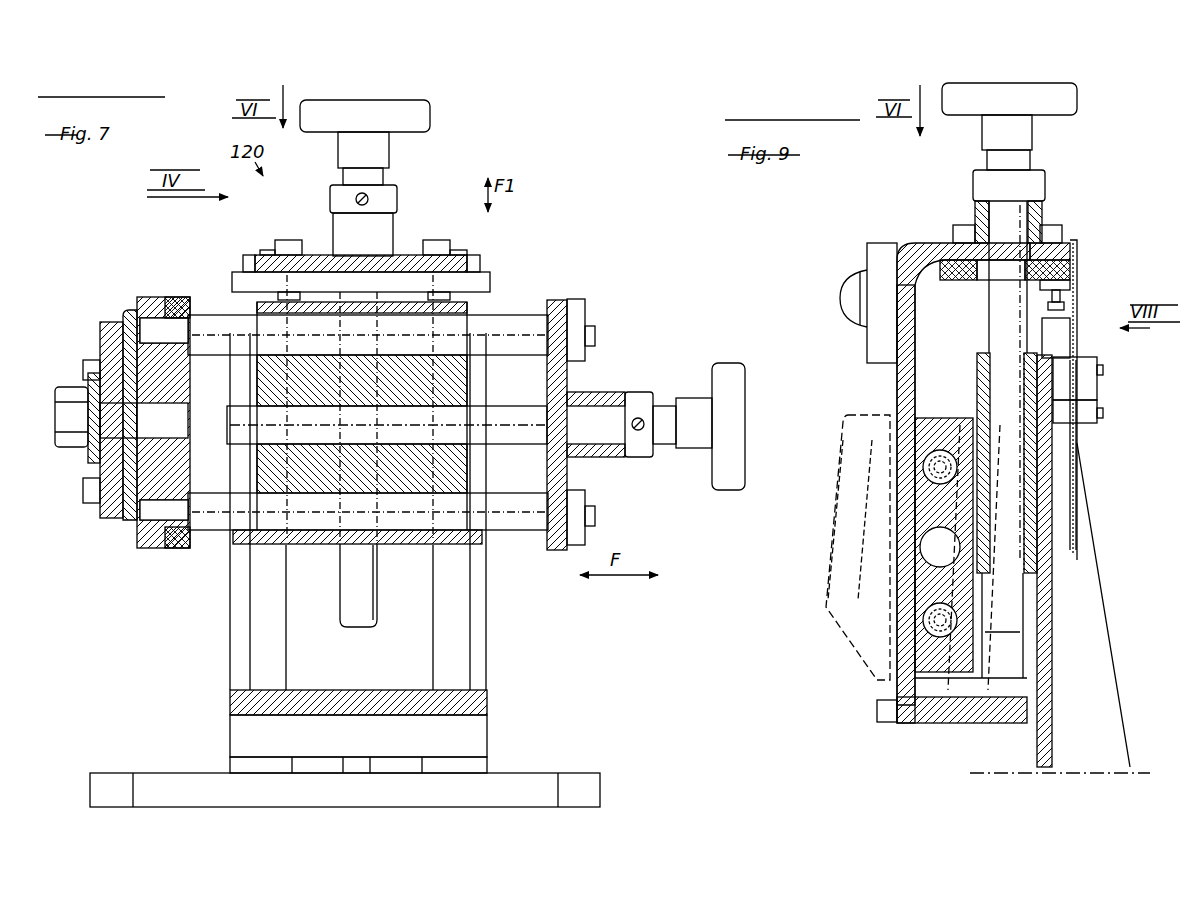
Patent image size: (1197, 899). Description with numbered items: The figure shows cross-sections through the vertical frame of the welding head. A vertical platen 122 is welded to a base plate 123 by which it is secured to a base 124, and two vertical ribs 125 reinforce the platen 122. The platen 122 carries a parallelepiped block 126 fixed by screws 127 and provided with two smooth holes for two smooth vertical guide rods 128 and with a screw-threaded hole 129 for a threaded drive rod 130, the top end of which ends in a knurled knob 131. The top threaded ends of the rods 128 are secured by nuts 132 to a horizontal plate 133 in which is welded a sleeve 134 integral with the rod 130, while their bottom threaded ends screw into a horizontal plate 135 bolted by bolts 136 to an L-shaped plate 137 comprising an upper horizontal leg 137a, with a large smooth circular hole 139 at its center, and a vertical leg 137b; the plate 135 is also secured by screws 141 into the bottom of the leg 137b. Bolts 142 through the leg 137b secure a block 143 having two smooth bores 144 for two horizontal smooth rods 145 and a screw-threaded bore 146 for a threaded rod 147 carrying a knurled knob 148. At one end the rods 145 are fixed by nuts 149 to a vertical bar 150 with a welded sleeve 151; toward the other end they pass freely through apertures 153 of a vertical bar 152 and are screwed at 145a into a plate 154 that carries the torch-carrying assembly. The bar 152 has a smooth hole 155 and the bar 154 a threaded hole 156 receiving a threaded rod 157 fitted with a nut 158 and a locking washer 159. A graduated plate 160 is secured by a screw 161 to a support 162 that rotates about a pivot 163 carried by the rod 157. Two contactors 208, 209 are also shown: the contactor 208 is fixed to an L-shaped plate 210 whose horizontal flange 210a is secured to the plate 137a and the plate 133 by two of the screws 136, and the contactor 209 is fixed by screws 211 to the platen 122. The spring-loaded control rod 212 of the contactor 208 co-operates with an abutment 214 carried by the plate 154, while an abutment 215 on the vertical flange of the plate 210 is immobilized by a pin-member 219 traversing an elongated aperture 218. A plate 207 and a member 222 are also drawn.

In FIG. 7, the vertical platen 122 is at (457, 740).
In FIG. 9, the vertical platen 122 is at (1042, 645).
In FIG. 7, the base plate 123 is at (255, 770).
In FIG. 7, the base 124 is at (575, 790).
In FIG. 9, the vertical ribs 125 is at (1090, 690).
In FIG. 7, the parallelepiped block 126 is at (505, 466).
In FIG. 9, the parallelepiped block 126 is at (978, 360).
In FIG. 9, the screws 127 is at (1040, 545).
In FIG. 7, the smooth vertical guide rods 128 is at (495, 643).
In FIG. 7, the screw-threaded hole 129 is at (455, 378).
In FIG. 7, the threaded drive rod 130 is at (357, 597).
In FIG. 9, the threaded drive rod 130 is at (1008, 313).
In FIG. 7, the knurled knob 131 is at (431, 112).
In FIG. 9, the knurled knob 131 is at (1050, 97).
In FIG. 7, the nuts 132 is at (525, 256).
In FIG. 7, the horizontal plate 133 is at (478, 286).
In FIG. 9, the horizontal plate 133 is at (1072, 268).
In FIG. 7, the sleeve 134 is at (365, 232).
In FIG. 9, the sleeve 134 is at (1042, 208).
In FIG. 7, the horizontal plate 135 is at (345, 690).
In FIG. 9, the horizontal plate 135 is at (945, 715).
In FIG. 7, the bolts 136 is at (436, 240).
In FIG. 9, the bolts 136 is at (1055, 224).
In FIG. 9, the L-shaped plate 137 is at (915, 250).
In FIG. 7, the upper horizontal leg 137a is at (318, 253).
In FIG. 9, the upper horizontal leg 137a is at (1072, 250).
In FIG. 9, the vertical leg 137b is at (905, 390).
In FIG. 7, the large smooth circular hole 139 is at (468, 253).
In FIG. 9, the screws 141 is at (875, 707).
In FIG. 9, the bolts 142 is at (905, 588).
In FIG. 7, the block 143 is at (250, 538).
In FIG. 9, the block 143 is at (900, 420).
In FIG. 7, the smooth bores 144 is at (410, 540).
In FIG. 7, the horizontal smooth rods 145 is at (512, 540).
In FIG. 9, the horizontal smooth rods 145 is at (925, 630).
In FIG. 7, the screwed ends of rods 145a is at (158, 553).
In FIG. 7, the screw-threaded bore 146 is at (325, 445).
In FIG. 7, the threaded rod 147 is at (387, 425).
In FIG. 9, the threaded rod 147 is at (920, 562).
In FIG. 7, the knurled knob 148 is at (722, 364).
In FIG. 7, the nuts 149 is at (610, 531).
In FIG. 7, the vertical bar 150 is at (566, 370).
In FIG. 7, the welded sleeve 151 is at (604, 457).
In FIG. 7, the vertical bar 152 is at (172, 296).
In FIG. 7, the apertures 153 is at (176, 550).
In FIG. 7, the plate 154 is at (137, 300).
In FIG. 9, the plate 154 is at (875, 652).
In FIG. 7, the smooth hole 155 is at (190, 400).
In FIG. 7, the threaded hole 156 is at (205, 448).
In FIG. 7, the threaded rod 157 is at (80, 420).
In FIG. 7, the nut 158 is at (72, 395).
In FIG. 9, the nut 158 is at (890, 505).
In FIG. 7, the locking washer 159 is at (85, 368).
In FIG. 9, the locking washer 159 is at (890, 520).
In FIG. 7, the graduated plate 160 is at (125, 312).
In FIG. 9, the graduated plate 160 is at (895, 625).
In FIG. 7, the screw 161 is at (90, 493).
In FIG. 7, the support 162 is at (100, 325).
In FIG. 9, the support 162 is at (890, 533).
In FIG. 7, the pivot 163 is at (90, 450).
In FIG. 9, the pivot 163 is at (888, 550).
In FIG. 9, the plate 207 is at (880, 341).
In FIG. 9, the contactor 208 is at (1068, 285).
In FIG. 9, the contactor 209 is at (1082, 388).
In FIG. 9, the L-shaped plate 210 is at (1070, 338).
In FIG. 9, the horizontal flange 210a is at (1078, 245).
In FIG. 9, the screws 211 is at (1103, 370).
In FIG. 9, the spring-loaded control rod 212 is at (1062, 298).
In FIG. 9, the abutment 214 is at (1118, 512).
In FIG. 9, the abutment 215 is at (1075, 418).
In FIG. 9, the elongated aperture 218 is at (1080, 448).
In FIG. 9, the pin-member 219 is at (1103, 413).
In FIG. 9, the button 222 is at (852, 292).